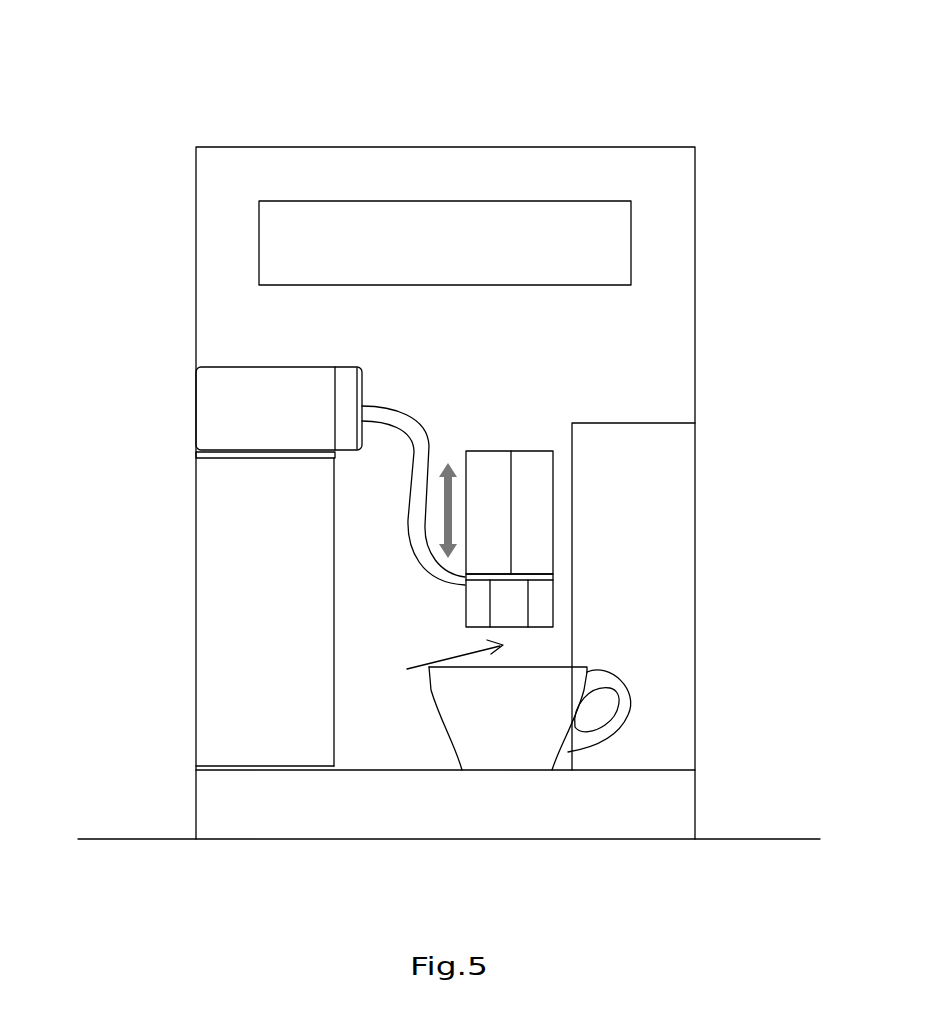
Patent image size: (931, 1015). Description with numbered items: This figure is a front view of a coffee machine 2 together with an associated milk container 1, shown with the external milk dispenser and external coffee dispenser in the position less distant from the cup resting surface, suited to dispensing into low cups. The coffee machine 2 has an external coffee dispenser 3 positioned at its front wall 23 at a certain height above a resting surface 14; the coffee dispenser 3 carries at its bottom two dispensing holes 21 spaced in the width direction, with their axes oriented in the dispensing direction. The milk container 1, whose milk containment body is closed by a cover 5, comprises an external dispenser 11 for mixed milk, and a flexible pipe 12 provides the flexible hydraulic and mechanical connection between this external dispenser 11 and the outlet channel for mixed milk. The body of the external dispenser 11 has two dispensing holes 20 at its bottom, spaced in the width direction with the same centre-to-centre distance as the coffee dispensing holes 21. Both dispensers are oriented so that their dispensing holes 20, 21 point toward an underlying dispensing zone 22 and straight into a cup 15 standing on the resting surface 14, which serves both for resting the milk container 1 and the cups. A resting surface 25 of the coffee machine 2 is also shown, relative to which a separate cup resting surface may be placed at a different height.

The milk container 1 is at (208, 549).
The coffee machine 2 is at (227, 111).
The external coffee dispenser 3 is at (543, 497).
The cover 5 is at (252, 413).
The external dispenser for mixed milk 11 is at (543, 600).
The flexible pipe 12 is at (423, 460).
The resting surface 14 is at (360, 767).
The cup 15 is at (542, 717).
The dispensing holes of the external milk dispenser 20 is at (478, 627).
The dispensing holes of the coffee dispenser 21 is at (540, 628).
The dispensing zone 22 is at (438, 663).
The front wall 23 is at (430, 330).
The resting surface of the coffee machine 25 is at (150, 840).